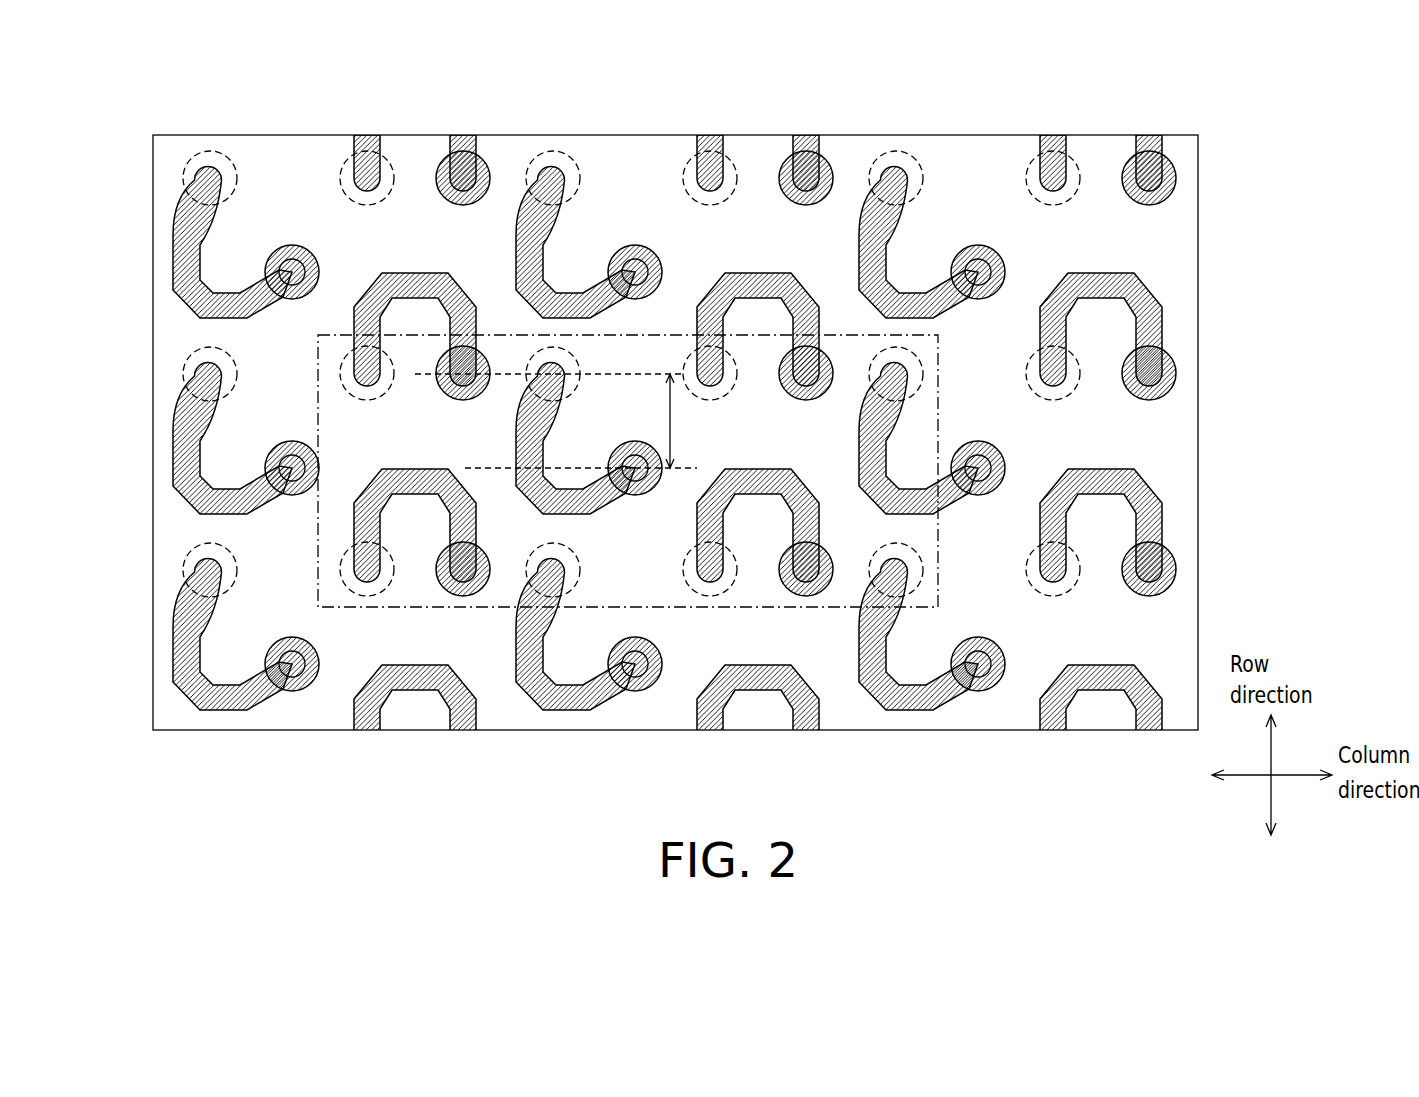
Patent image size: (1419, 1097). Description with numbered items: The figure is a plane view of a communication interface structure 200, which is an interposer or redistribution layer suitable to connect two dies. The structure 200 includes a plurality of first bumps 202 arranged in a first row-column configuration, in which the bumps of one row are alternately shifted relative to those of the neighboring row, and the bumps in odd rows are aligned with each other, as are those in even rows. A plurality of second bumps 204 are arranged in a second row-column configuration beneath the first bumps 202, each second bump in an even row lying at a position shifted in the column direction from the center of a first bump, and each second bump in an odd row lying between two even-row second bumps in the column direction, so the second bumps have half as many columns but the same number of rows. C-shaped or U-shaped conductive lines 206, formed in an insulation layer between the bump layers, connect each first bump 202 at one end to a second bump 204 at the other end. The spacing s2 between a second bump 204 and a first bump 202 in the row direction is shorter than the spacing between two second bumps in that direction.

The communication interface structure 200 is at (150, 97).
The first bump 202 is at (1268, 559).
The second bump 204 is at (1268, 620).
The conductive line 206 is at (176, 281).
The spacing s2 is at (557, 421).